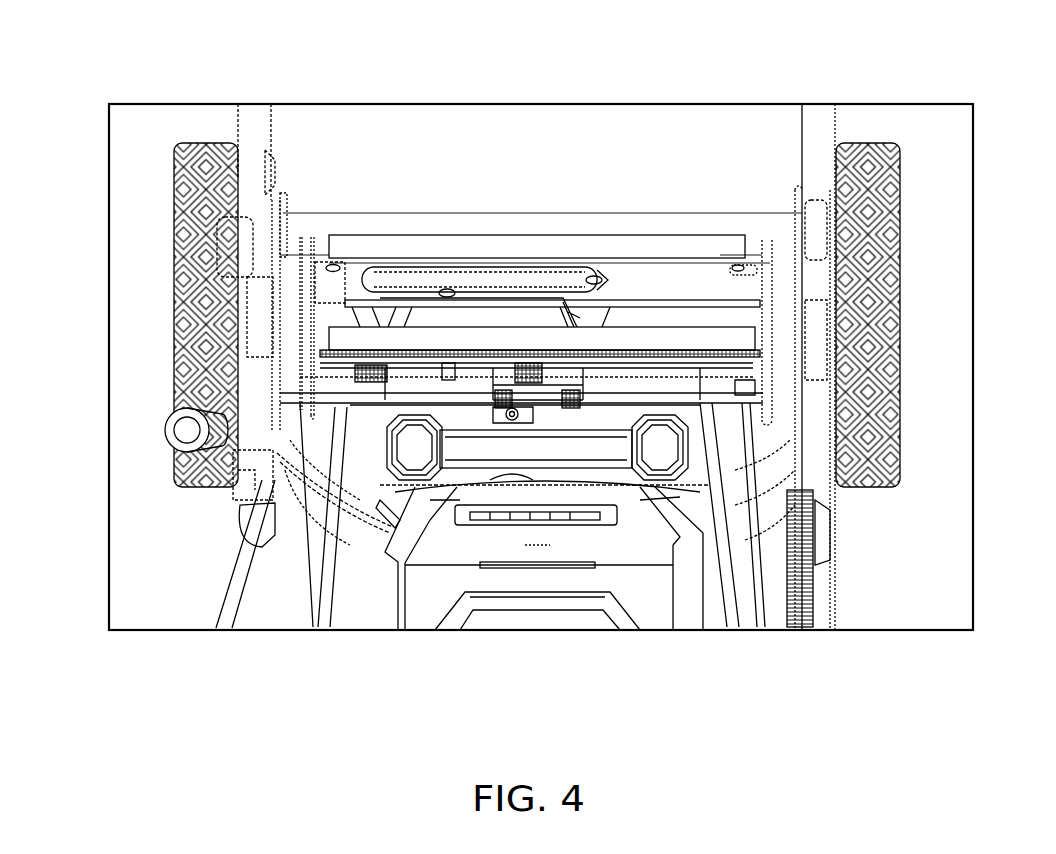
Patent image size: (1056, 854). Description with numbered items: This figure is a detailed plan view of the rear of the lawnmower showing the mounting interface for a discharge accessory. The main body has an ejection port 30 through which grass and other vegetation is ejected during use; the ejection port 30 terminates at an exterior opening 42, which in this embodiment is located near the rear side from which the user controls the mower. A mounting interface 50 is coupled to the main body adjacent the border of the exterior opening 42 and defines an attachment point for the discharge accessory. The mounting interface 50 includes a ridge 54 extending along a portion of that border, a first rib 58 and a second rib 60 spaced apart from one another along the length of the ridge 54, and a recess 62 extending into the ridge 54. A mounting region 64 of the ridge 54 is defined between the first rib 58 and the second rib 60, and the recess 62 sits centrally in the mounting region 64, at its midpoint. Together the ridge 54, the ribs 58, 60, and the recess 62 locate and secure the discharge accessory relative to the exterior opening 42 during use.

The ejection port 30 is at (521, 318).
The exterior opening 42 is at (362, 302).
The mounting interface 50 is at (547, 324).
The ridge 54 is at (436, 352).
The first rib 58 is at (540, 372).
The second rib 60 is at (353, 377).
The recess 62 is at (447, 380).
The mounting region 64 is at (477, 318).